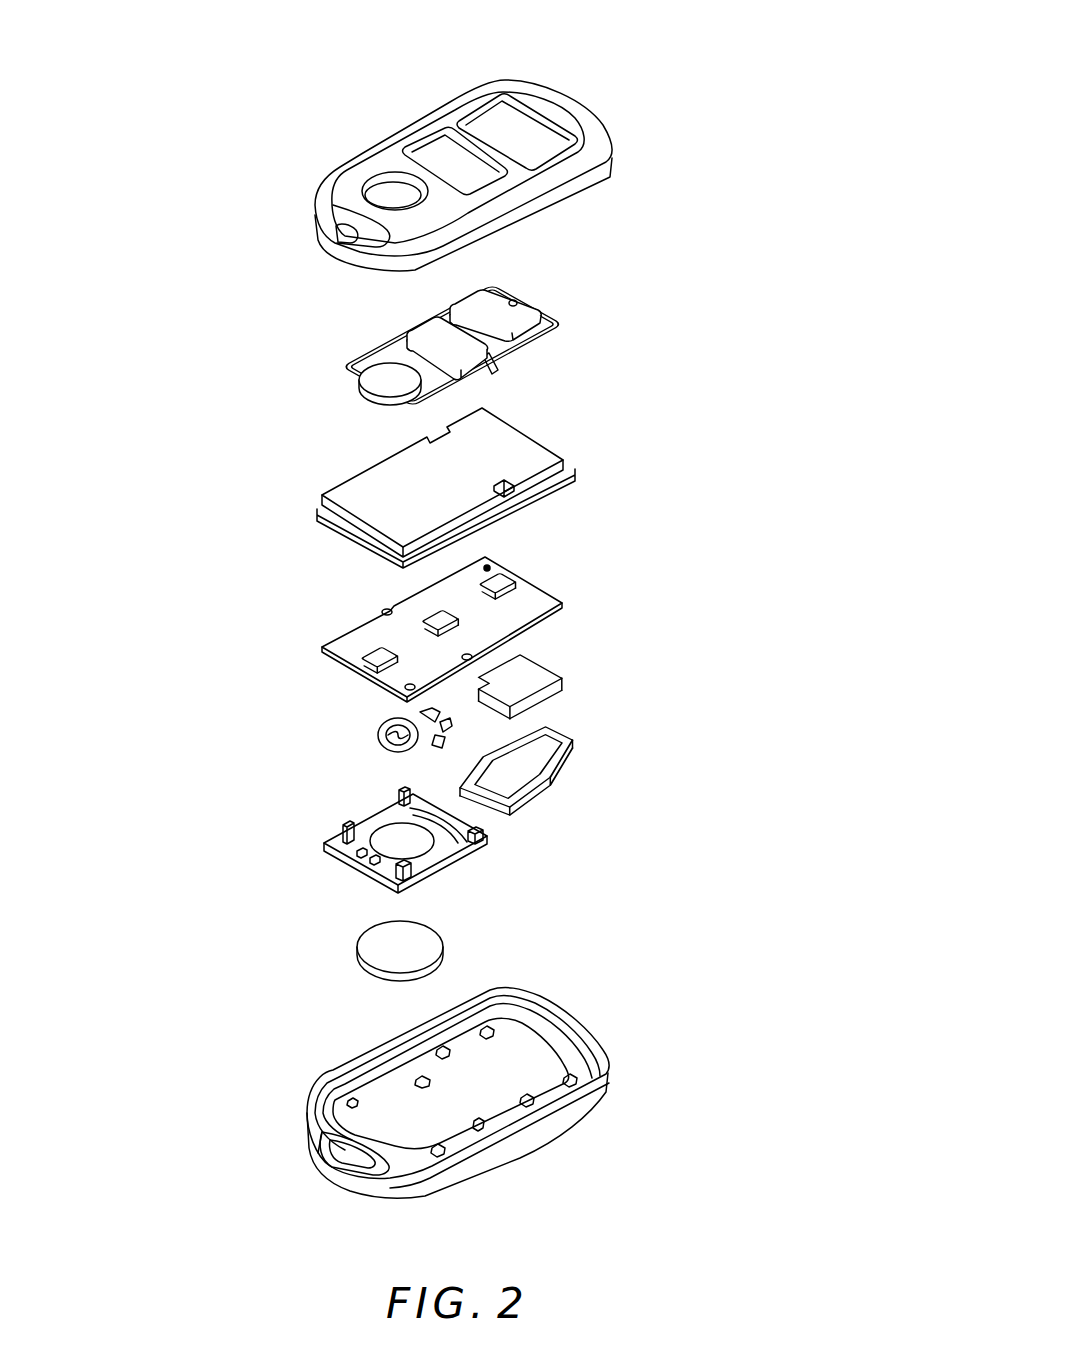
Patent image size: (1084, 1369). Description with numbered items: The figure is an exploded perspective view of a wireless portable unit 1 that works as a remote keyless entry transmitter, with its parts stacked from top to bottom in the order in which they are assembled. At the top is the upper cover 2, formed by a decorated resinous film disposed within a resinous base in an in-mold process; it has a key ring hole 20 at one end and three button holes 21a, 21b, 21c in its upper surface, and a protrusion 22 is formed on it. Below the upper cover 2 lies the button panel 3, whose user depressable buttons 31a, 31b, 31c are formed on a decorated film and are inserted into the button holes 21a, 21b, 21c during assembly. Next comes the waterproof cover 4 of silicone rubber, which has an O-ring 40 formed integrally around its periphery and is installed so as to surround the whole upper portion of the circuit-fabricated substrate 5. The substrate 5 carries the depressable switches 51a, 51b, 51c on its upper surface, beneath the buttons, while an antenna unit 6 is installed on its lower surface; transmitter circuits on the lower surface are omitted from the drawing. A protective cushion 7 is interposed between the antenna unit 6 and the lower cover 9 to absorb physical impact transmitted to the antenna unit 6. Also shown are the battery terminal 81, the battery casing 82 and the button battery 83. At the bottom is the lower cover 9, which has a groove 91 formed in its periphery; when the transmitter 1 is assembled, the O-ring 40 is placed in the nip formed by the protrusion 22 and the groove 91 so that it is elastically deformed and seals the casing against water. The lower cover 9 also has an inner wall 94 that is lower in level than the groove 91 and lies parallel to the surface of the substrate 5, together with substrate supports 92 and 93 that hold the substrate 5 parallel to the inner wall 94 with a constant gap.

The wireless portable unit 1 is at (731, 381).
The upper cover 2 is at (593, 153).
The key ring hole 20 is at (337, 230).
The button hole 21a is at (374, 162).
The button hole 21b is at (427, 115).
The button hole 21c is at (511, 88).
The protrusion 22 is at (606, 182).
The button panel 3 is at (553, 337).
The user depressable button 31a is at (377, 385).
The user depressable button 31b is at (437, 338).
The user depressable button 31c is at (480, 305).
The waterproof cover 4 is at (523, 458).
The O-ring 40 is at (572, 478).
The circuit-fabricated substrate 5 is at (553, 595).
The depressable switch 51a is at (373, 653).
The depressable switch 51b is at (433, 622).
The depressable switch 51c is at (538, 570).
The antenna unit 6 is at (530, 668).
The protective cushion 7 is at (537, 793).
The battery terminal 81 is at (380, 728).
The battery casing 82 is at (327, 847).
The button battery 83 is at (357, 947).
The lower cover 9 is at (600, 1050).
The groove 91 is at (495, 993).
The substrate support 92 is at (453, 1018).
The substrate support 93 is at (333, 1073).
The inner wall 94 is at (523, 1057).